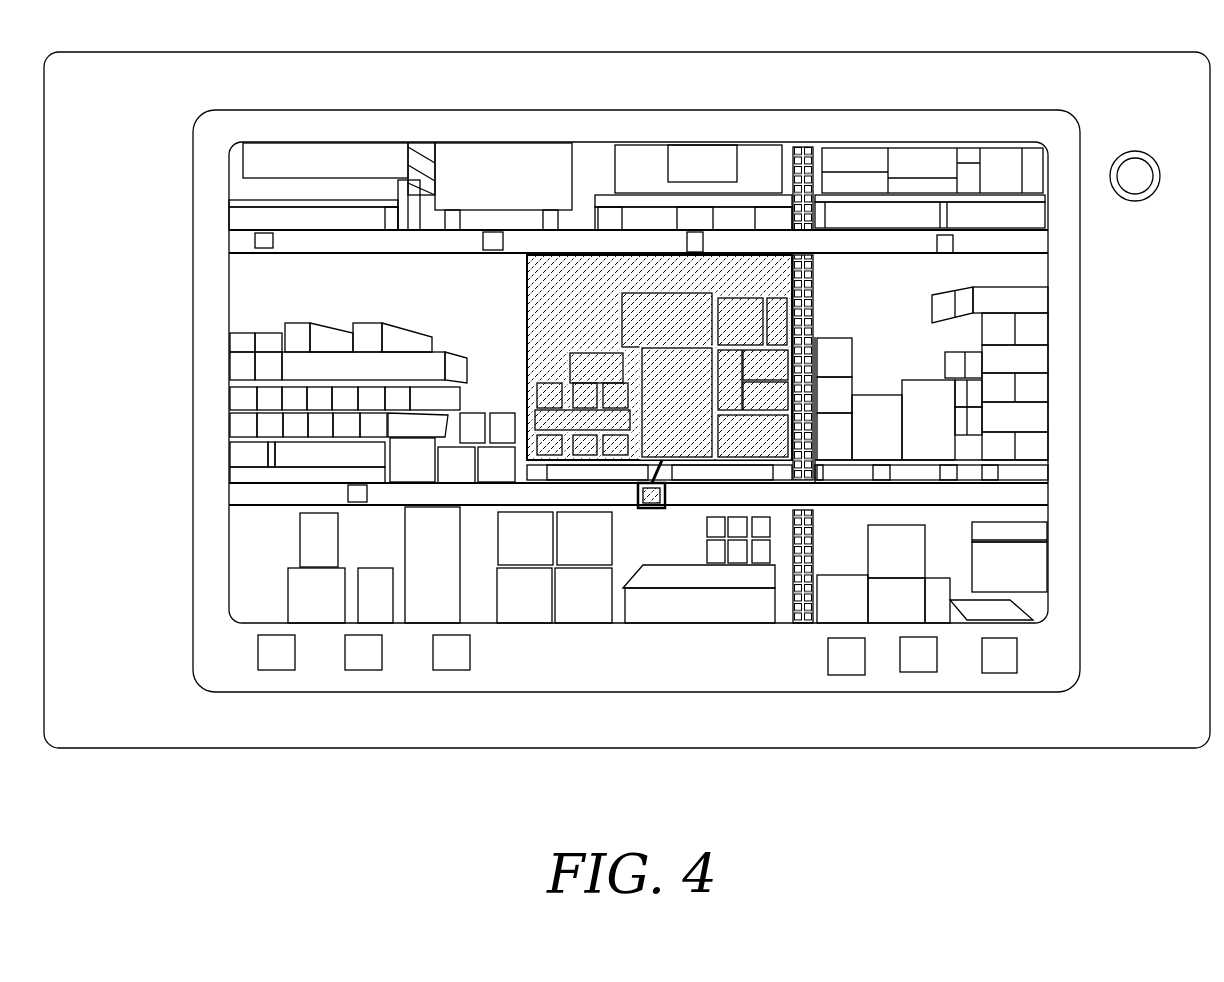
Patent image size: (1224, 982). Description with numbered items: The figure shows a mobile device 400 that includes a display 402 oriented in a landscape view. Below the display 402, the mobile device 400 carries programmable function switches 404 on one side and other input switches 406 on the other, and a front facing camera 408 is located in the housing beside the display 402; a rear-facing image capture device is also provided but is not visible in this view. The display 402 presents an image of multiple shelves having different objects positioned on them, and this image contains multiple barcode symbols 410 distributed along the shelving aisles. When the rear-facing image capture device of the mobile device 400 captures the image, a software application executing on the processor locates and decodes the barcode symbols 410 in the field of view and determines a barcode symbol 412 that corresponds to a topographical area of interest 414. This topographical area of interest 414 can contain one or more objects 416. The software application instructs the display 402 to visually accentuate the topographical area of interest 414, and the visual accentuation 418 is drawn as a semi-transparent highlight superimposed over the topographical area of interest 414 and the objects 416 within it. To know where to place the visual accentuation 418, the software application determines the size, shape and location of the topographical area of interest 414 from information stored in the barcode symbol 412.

The mobile device 400 is at (598, 53).
The display 402 is at (229, 283).
The programmable function switches 404 is at (276, 670).
The other input switches 406 is at (846, 675).
The front facing camera 408 is at (1135, 151).
The barcode symbols 410 is at (264, 249).
The barcode symbol 412 is at (642, 509).
The topographical area of interest 414 is at (530, 362).
The objects 416 is at (698, 408).
The visual accentuation 418 is at (598, 320).